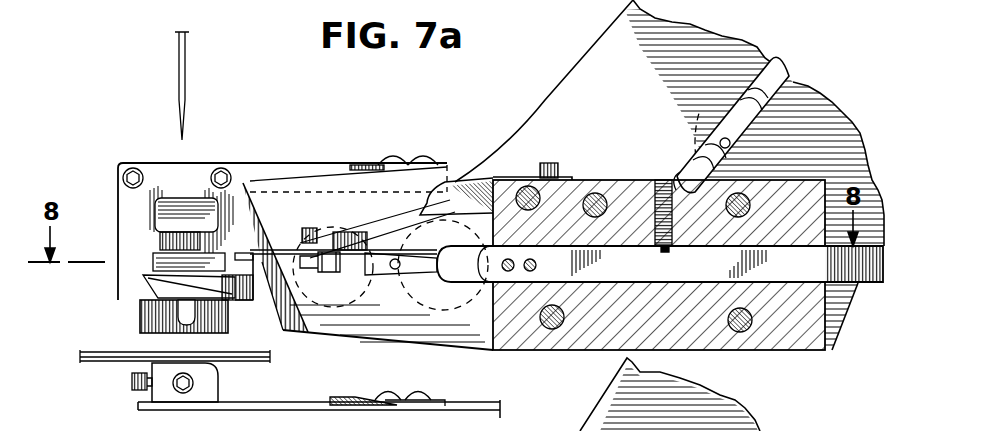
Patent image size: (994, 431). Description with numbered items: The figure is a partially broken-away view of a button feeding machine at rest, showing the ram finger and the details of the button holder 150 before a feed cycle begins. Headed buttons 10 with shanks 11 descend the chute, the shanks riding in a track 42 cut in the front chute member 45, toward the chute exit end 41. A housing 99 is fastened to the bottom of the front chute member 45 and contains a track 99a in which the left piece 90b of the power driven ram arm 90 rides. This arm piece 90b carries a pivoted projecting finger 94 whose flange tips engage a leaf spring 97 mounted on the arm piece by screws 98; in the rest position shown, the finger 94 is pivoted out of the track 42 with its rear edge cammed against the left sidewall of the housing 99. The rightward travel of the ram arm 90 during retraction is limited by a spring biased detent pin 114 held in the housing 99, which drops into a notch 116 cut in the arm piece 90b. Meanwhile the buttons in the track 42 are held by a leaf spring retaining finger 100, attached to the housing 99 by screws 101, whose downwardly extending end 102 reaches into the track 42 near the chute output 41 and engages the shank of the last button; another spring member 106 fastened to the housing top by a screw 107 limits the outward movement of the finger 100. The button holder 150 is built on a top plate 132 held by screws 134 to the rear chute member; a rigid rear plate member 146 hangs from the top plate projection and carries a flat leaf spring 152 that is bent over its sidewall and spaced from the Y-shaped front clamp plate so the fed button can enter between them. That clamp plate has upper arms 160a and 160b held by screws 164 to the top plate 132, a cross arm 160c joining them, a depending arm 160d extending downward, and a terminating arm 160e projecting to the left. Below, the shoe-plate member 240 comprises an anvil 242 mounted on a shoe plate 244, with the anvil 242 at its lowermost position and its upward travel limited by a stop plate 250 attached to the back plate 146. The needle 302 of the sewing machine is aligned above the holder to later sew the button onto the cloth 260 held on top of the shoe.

The headed button 10 is at (790, 76).
The shank 11 is at (765, 76).
The track 42 is at (720, 140).
The front chute member 45 is at (638, 115).
The housing 99 is at (763, 345).
The track 99a is at (632, 270).
The ram arm 90 is at (843, 296).
The left piece of ram arm 90b is at (712, 268).
The spring biased detent pin 114 is at (658, 243).
The notch 116 is at (665, 252).
The screw 107 is at (556, 164).
The screws 101 is at (523, 190).
The screws 98 is at (505, 272).
The top plate 132 is at (296, 164).
The exit end of chute 41 is at (296, 318).
The spring member 106 is at (470, 178).
The leaf spring retaining finger 100 is at (402, 210).
The screws 134 is at (396, 156).
The projecting finger 94 is at (376, 260).
The leaf spring 97 is at (470, 270).
The downwardly extending end 102 is at (322, 236).
The screws 164 is at (131, 167).
The upper arm of clamp plate 160a is at (120, 178).
The upper arm of clamp plate 160b is at (205, 166).
The flat leaf spring 152 is at (158, 216).
The button holder 150 is at (130, 229).
The cross arm 160c is at (162, 240).
The terminating arm 160e is at (145, 278).
The rigid rear plate member 146 is at (125, 291).
The stop plate 250 is at (160, 318).
The depending arm 160d is at (238, 300).
The needle 302 is at (186, 100).
The cloth 260 is at (108, 362).
The anvil 242 is at (200, 395).
The shoe plate 244 is at (257, 403).
The shoe-plate member 240 is at (432, 384).